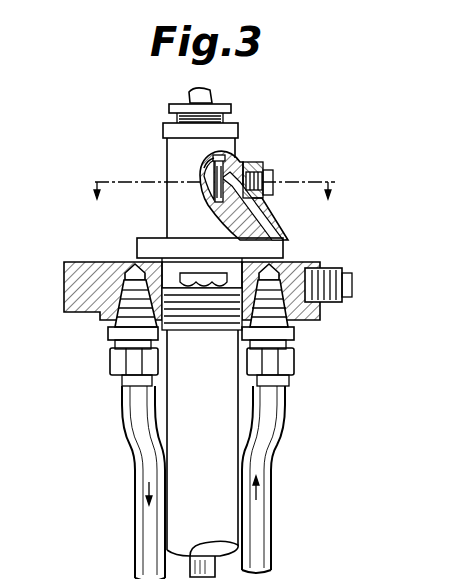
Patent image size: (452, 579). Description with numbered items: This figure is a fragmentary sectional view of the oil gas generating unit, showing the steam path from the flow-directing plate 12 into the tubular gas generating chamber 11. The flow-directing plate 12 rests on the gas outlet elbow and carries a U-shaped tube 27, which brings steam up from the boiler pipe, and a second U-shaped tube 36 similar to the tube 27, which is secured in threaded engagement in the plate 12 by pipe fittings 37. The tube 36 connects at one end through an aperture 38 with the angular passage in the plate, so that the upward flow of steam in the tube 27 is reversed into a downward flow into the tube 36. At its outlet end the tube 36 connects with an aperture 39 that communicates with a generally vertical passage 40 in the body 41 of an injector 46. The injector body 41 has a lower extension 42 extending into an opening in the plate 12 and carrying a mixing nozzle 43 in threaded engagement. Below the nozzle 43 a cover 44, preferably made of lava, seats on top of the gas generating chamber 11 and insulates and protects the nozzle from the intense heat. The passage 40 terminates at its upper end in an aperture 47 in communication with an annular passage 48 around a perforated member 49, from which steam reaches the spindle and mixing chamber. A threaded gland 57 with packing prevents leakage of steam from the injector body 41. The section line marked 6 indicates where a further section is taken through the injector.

The tubular gas generating chamber 11 is at (205, 463).
The flow-directing plate 12 is at (80, 312).
The U-shaped tube 27 is at (190, 568).
The U-shaped tube 36 is at (122, 500).
The pipe fittings 37 is at (110, 356).
The aperture 38 is at (122, 290).
The aperture 39 is at (280, 290).
The vertical passage 40 is at (300, 215).
The injector body 41 is at (172, 168).
The lower extension 42 is at (193, 262).
The mixing nozzle 43 is at (165, 255).
The cover 44 is at (178, 293).
The injector 46 is at (300, 167).
The aperture 47 is at (250, 165).
The annular passage 48 is at (224, 168).
The perforated member 49 is at (206, 164).
The threaded gland 57 is at (231, 105).
The section line 6- 6 is at (213, 199).